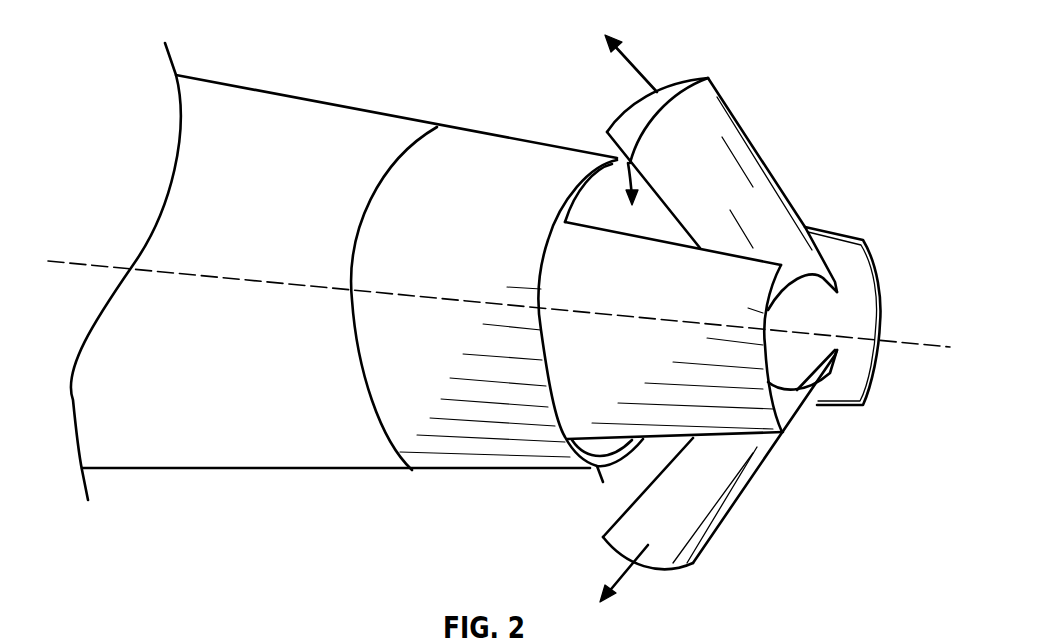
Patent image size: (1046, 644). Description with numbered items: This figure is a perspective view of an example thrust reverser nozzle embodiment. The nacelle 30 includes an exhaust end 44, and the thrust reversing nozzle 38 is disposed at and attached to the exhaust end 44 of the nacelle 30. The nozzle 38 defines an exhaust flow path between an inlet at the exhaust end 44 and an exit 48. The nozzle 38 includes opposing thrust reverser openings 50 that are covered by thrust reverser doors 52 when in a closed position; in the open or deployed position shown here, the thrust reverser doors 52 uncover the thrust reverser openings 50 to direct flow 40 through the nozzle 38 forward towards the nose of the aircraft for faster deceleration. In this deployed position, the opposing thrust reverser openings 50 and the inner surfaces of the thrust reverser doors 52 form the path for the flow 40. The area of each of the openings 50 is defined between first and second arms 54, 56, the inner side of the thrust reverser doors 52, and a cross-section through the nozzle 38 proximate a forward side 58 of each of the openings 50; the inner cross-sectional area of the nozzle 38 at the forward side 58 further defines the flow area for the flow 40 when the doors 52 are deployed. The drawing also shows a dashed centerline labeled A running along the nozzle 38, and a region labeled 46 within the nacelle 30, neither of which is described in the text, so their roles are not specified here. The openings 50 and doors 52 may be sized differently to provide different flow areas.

The nacelle 30 is at (297, 133).
The thrust reversing nozzle 38 is at (521, 170).
The flow 40 is at (638, 67).
The exhaust end 44 is at (378, 198).
The tube interior 46 is at (352, 385).
The exit 48 is at (883, 262).
The thrust reverser openings 50 is at (708, 78).
The thrust reverser doors 52 is at (735, 183).
The first arm 54 is at (790, 427).
The second arm 56 is at (857, 367).
The forward side 58 is at (595, 183).
The axis A is at (903, 338).